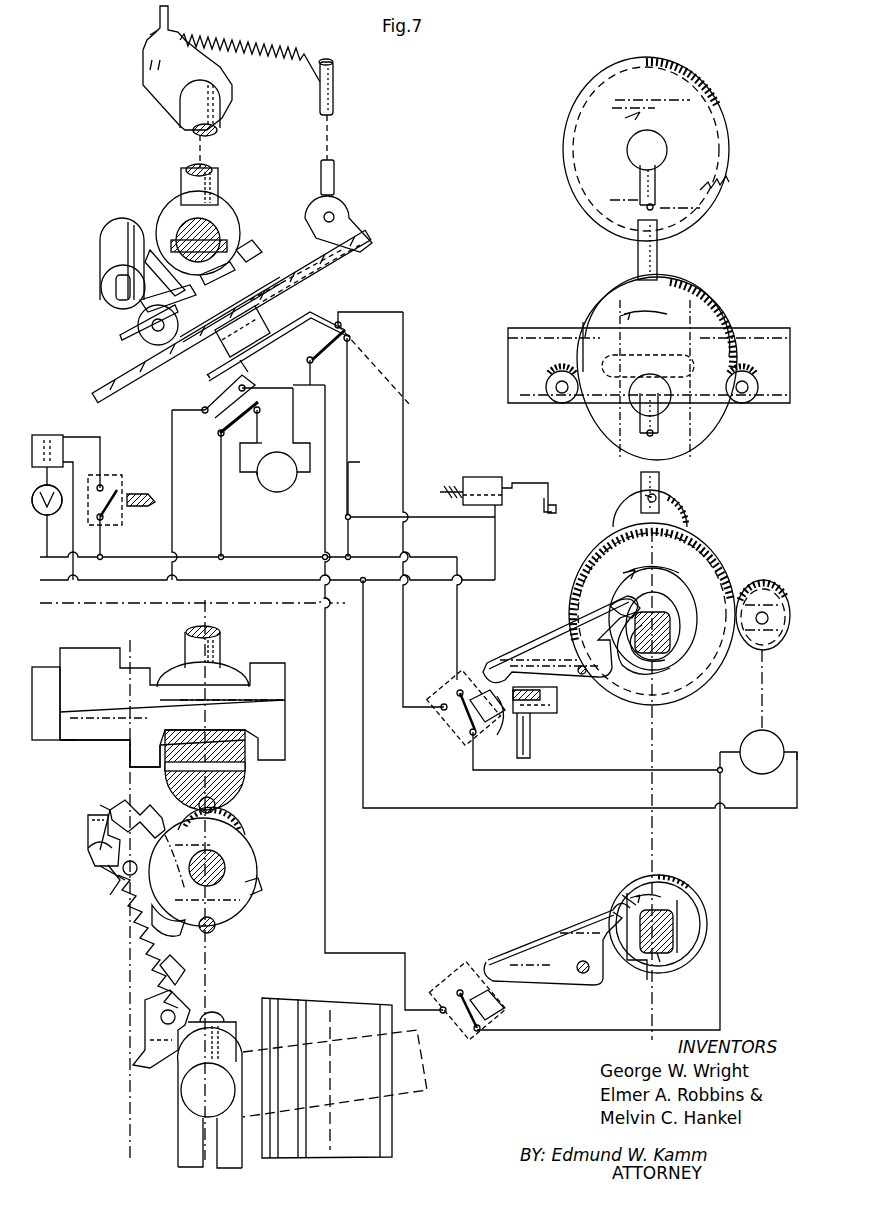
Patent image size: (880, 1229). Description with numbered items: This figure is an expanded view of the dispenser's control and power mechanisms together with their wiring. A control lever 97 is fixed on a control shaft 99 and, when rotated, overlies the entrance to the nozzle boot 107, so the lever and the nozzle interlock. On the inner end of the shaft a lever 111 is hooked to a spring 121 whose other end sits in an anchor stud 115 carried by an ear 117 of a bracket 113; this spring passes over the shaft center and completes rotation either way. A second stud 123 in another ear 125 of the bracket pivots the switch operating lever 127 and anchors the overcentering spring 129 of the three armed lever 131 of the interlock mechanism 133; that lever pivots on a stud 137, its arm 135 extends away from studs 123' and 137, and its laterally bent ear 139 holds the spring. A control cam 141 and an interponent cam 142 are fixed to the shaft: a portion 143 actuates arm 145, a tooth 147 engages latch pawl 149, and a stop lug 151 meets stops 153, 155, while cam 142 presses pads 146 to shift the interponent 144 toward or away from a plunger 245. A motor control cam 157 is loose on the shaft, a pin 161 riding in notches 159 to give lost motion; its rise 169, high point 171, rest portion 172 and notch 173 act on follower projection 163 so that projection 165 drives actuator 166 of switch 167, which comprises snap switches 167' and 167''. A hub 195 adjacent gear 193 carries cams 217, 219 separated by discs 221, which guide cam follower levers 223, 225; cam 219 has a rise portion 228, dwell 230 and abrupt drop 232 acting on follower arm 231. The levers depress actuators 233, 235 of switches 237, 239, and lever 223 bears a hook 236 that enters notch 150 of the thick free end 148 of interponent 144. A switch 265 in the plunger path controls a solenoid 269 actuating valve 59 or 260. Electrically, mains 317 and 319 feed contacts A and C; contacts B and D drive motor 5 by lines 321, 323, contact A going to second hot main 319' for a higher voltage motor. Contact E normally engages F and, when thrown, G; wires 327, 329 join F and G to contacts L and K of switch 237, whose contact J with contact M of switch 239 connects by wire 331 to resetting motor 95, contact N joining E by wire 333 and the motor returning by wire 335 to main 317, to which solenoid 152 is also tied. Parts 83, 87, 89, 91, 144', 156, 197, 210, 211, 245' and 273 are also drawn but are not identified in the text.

The motor 5 is at (282, 488).
The valve 59 is at (48, 514).
The base bar 83 is at (548, 333).
The rollers 87 is at (556, 400).
The dome cam 89 is at (712, 320).
The shaft 91 is at (650, 220).
The resetting motor 95 is at (745, 738).
The control lever 97 is at (190, 1130).
The control shaft 99 is at (205, 168).
The nozzle boot 107 is at (300, 1020).
The lever 111 is at (145, 66).
The bracket 113 is at (96, 398).
The anchor stud 115 is at (330, 160).
The ear 117 is at (345, 215).
The spring 121 is at (258, 45).
The second stud 123 is at (112, 343).
The stud 123' is at (139, 1029).
The ear 125 is at (140, 300).
The switch operating lever 127 is at (138, 325).
The overcentering spring 129 is at (130, 930).
The three armed lever 131 is at (125, 895).
The interlock mechanism 133 is at (102, 916).
The arm 135 is at (105, 810).
The stud 137 is at (120, 290).
The laterally bent ear 139 is at (90, 832).
The control cam 141 is at (265, 853).
The interponent cam 142 is at (185, 672).
The portion 143 is at (172, 800).
The interponent 144 is at (347, 747).
The plunger 144' is at (530, 478).
The arm 145 is at (182, 922).
The pads 146 is at (288, 740).
The tooth 147 is at (225, 826).
The free end 148 is at (85, 728).
The latch pawl 149 is at (140, 808).
The notch 150 is at (558, 705).
The stop lug 151 is at (258, 890).
The solenoid 152 is at (485, 477).
The stop 153 is at (215, 926).
The stop 155 is at (215, 805).
The spring 156 is at (450, 485).
The motor control cam 157 is at (240, 230).
The notches 159 is at (228, 225).
The pin 161 is at (178, 238).
The cam follower projection 163 is at (205, 322).
The second projection 165 is at (230, 320).
The actuator 166 is at (318, 262).
The switch 167 is at (333, 275).
The snap switch 167' is at (252, 381).
The snap switch 167'' is at (391, 360).
The rise 169 is at (210, 272).
The high point 171 is at (277, 346).
The rest portion 172 is at (156, 220).
The notch 173 is at (150, 268).
The gear 193 is at (710, 553).
The hub 195 is at (665, 650).
The dome 197 is at (690, 518).
The pin 210 is at (657, 500).
The shaft 211 is at (655, 475).
The cam 217 is at (706, 678).
The cam 219 is at (665, 883).
The disc 221 is at (680, 596).
The cam follower lever 223 is at (544, 652).
The cam follower lever 225 is at (562, 938).
The rise portion 228 is at (612, 905).
The dwell 230 is at (640, 880).
The follower arm 231 is at (612, 910).
The abrupt drop 232 is at (650, 980).
The actuator 233 is at (495, 719).
The actuator 235 is at (555, 951).
The hook 236 is at (505, 680).
The snap action switch 237 is at (448, 722).
The snap switch 239 is at (612, 622).
The plunger 245 is at (353, 603).
The contact 245' is at (574, 496).
The valve 260 is at (46, 516).
The switch 265 is at (105, 480).
The solenoid 269 is at (46, 435).
The disc 273 is at (583, 155).
The power supply main 317 is at (172, 526).
The power supply main 319 is at (248, 536).
The second hot main 319' is at (192, 614).
The line 321 is at (296, 425).
The line 323 is at (255, 478).
The wire 327 is at (403, 312).
The wire 329 is at (480, 598).
The wire 331 is at (545, 770).
The wire 333 is at (323, 505).
The wire 335 is at (745, 810).
The contact A is at (203, 405).
The contact B is at (246, 386).
The contact C is at (218, 433).
The contact D is at (260, 409).
The movable contact E is at (334, 320).
The contact F is at (345, 332).
The contact G is at (352, 334).
The movable contact J is at (468, 733).
The fixed contact K is at (462, 688).
The contact L is at (440, 702).
The movable contact M is at (488, 1012).
The contact N is at (440, 1005).